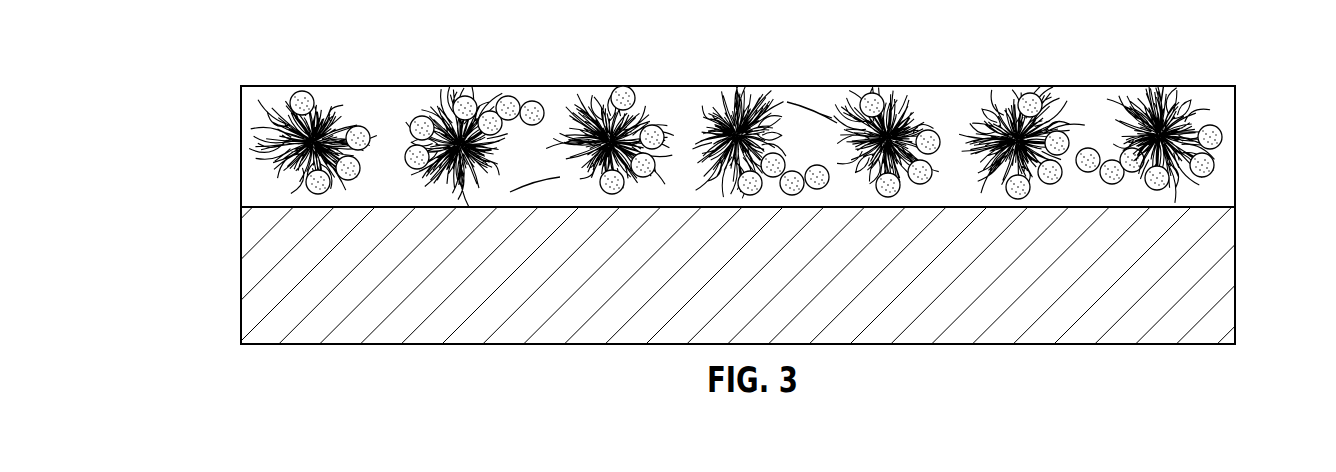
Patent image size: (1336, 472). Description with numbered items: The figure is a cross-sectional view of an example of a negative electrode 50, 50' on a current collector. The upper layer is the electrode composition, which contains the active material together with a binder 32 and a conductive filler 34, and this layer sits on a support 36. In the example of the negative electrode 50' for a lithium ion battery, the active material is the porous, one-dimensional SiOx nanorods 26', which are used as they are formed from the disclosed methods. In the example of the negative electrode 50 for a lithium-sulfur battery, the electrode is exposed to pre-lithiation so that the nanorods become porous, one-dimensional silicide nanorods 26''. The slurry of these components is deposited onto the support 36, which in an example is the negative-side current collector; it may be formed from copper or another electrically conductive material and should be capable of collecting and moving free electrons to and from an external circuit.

The negative electrode 50 is at (726, 183).
The negative electrode 50' is at (726, 183).
The porous, one-dimensional SiOx nanorods 26' is at (757, 121).
The porous, one-dimensional silicide nanorods 26'' is at (1018, 115).
The binder 32 is at (1092, 155).
The conductive filler 34 is at (1223, 130).
The support 36 is at (1190, 268).